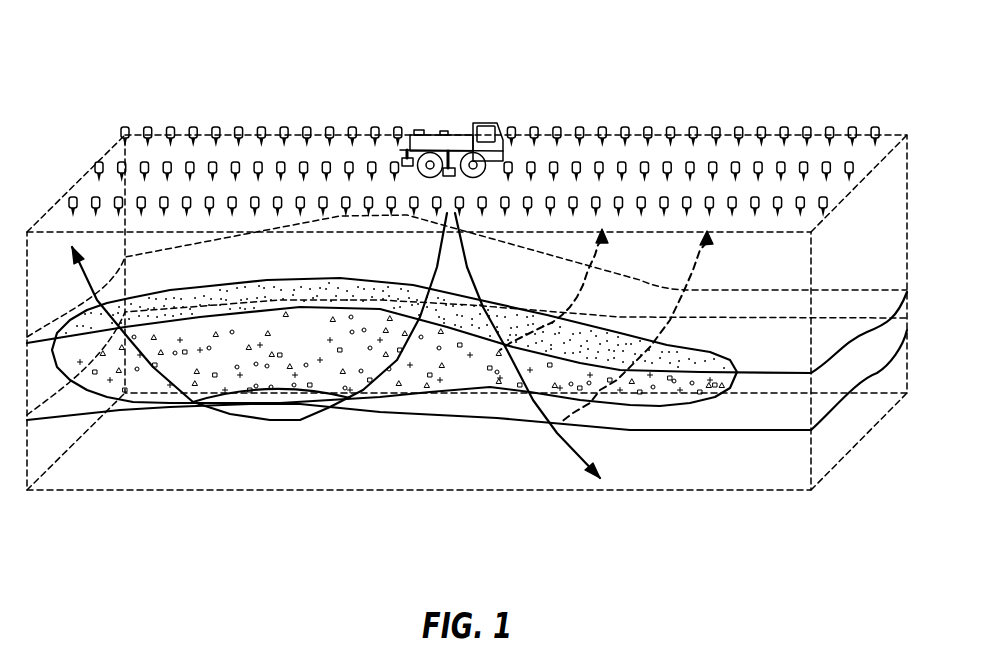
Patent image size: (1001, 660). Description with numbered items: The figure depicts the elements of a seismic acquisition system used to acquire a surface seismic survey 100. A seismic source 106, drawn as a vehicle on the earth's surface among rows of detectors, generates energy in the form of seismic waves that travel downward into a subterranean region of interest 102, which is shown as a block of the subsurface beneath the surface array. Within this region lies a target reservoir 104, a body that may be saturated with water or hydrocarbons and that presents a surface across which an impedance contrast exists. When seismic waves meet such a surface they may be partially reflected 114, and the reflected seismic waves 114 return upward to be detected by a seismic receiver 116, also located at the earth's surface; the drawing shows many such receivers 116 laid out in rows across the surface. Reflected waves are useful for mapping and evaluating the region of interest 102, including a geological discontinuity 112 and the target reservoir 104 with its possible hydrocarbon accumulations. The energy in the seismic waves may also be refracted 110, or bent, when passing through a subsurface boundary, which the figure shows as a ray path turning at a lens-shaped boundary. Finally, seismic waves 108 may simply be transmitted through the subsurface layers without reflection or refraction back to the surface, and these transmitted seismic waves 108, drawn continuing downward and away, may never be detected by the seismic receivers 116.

The surface seismic survey 100 is at (670, 57).
The subterranean region of interest 102 is at (657, 492).
The target reservoir 104 is at (677, 405).
The seismic source 106 is at (485, 123).
The transmitted seismic waves 108 is at (578, 458).
The refracted seismic waves 110 is at (270, 420).
The geological discontinuity 112 is at (453, 410).
The reflected seismic waves 114 is at (601, 254).
The seismic receiver 116 is at (762, 127).